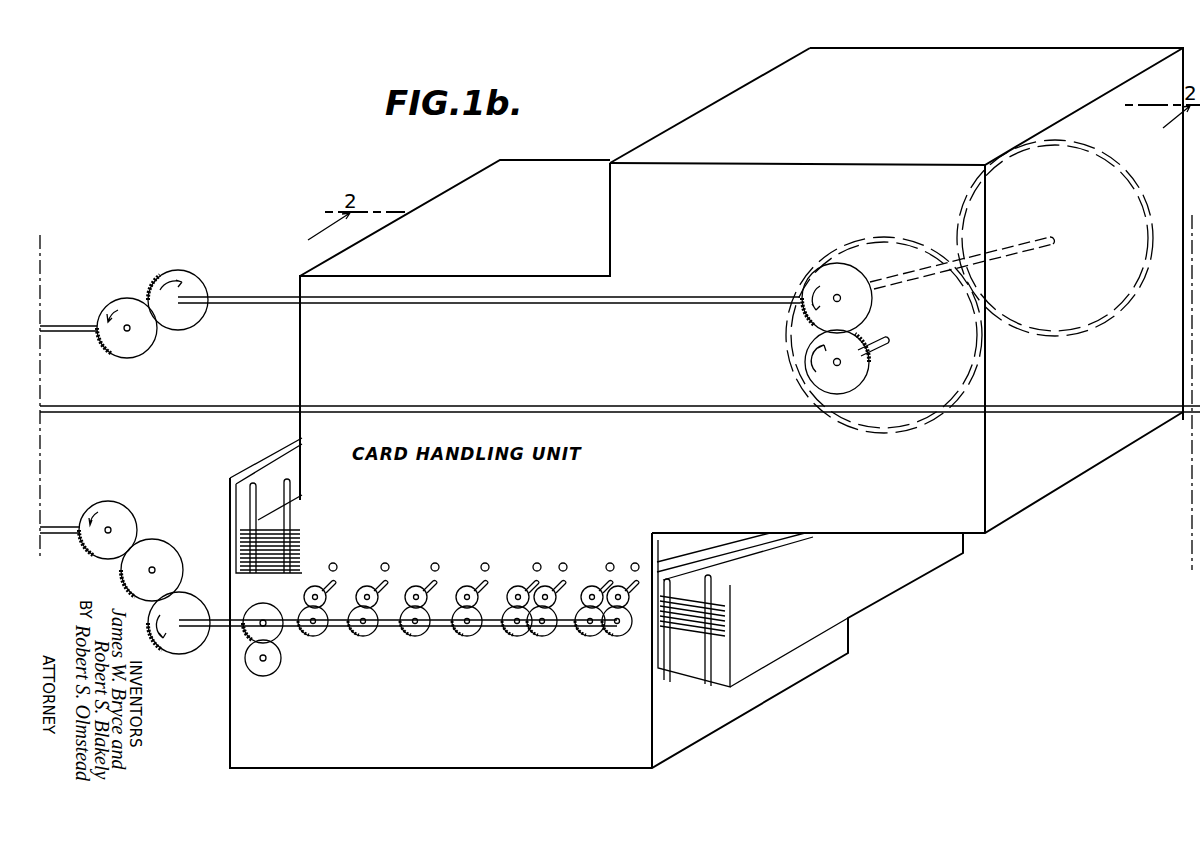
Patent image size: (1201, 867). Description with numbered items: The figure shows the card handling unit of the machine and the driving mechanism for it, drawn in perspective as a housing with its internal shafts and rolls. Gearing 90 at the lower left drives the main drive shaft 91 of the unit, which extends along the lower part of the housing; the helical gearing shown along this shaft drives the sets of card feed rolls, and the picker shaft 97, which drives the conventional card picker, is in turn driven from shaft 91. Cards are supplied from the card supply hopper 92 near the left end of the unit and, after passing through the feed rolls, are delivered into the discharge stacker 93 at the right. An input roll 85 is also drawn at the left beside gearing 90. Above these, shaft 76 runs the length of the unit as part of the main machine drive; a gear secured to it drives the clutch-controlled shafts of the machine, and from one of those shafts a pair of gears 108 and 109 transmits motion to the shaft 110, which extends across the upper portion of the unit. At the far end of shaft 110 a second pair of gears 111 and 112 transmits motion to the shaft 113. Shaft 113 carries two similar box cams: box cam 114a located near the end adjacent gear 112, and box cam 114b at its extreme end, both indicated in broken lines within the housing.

The shaft 76 is at (332, 406).
The feed roller 85 is at (62, 527).
The gearing 90 is at (192, 605).
The main drive shaft 91 is at (218, 632).
The card supply hopper 92 is at (268, 528).
The discharge stacker 93 is at (700, 600).
The picker shaft 97 is at (280, 648).
The gear 108 is at (134, 350).
The gear 109 is at (176, 270).
The shaft 110 is at (259, 304).
The gear 111 is at (806, 282).
The gear 112 is at (812, 372).
The shaft 113 is at (836, 366).
The box cam 114a is at (882, 242).
The box cam 114b is at (1124, 300).